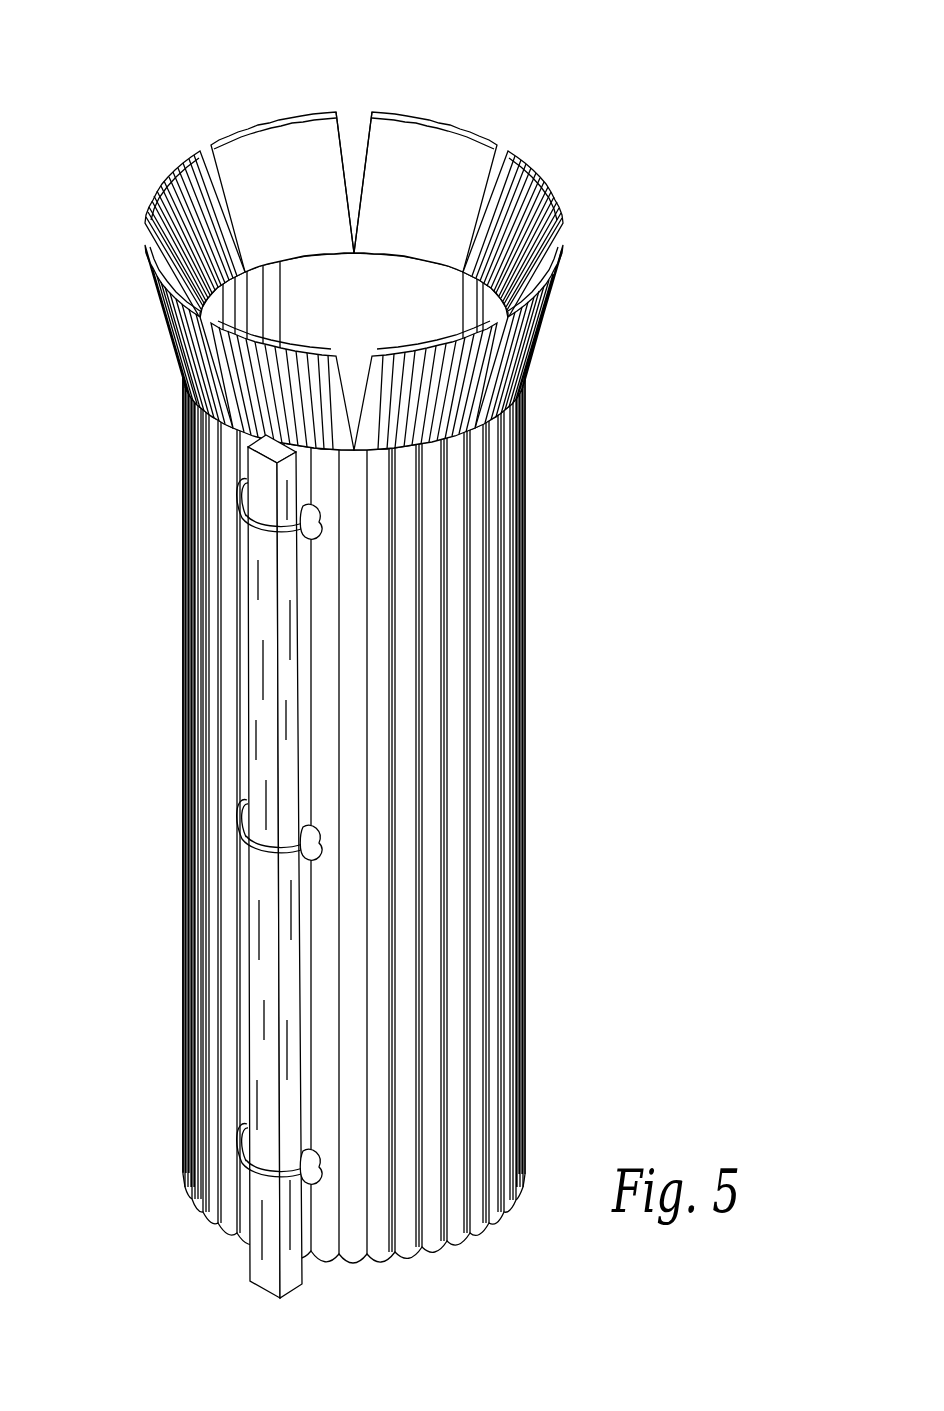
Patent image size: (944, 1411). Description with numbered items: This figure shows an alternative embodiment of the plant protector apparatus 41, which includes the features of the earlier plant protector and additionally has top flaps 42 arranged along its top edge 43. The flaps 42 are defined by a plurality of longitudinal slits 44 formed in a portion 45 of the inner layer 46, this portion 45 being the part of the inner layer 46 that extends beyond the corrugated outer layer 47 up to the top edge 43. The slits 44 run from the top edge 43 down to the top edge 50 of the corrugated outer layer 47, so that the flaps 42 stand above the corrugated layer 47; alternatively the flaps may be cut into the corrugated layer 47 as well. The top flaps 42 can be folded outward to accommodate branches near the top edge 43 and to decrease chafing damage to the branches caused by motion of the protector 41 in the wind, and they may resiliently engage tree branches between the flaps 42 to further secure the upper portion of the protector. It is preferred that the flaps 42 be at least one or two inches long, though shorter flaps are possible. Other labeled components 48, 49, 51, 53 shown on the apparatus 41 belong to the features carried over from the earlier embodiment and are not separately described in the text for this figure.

The plant protector apparatus 41 is at (379, 676).
The top flaps 42 is at (553, 192).
The top edge 43 is at (262, 112).
The longitudinal slits 44 is at (352, 123).
The portion of the inner layer 45 is at (173, 320).
The inner layer 46 is at (463, 168).
The corrugated outer layer 47 is at (187, 417).
The tie 48 is at (320, 848).
The corrugation ridges 49 is at (525, 665).
The top edge of the corrugated outer layer 50 is at (503, 393).
The stake 51 is at (267, 1207).
The tie 53 is at (247, 1157).